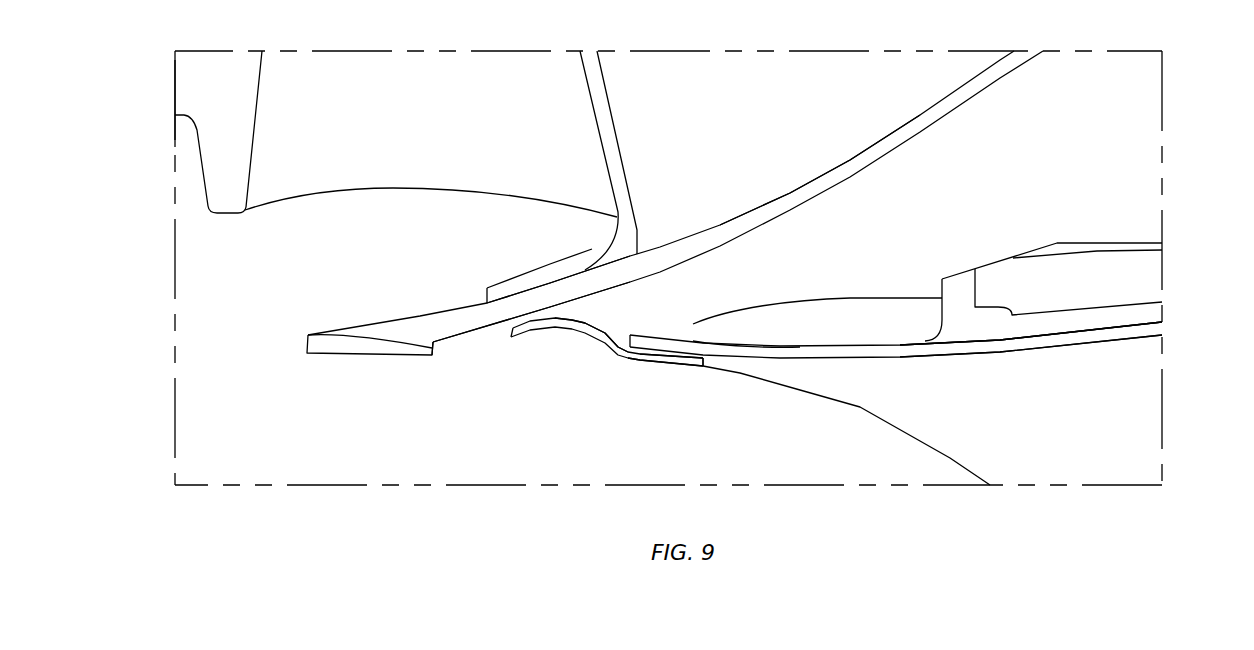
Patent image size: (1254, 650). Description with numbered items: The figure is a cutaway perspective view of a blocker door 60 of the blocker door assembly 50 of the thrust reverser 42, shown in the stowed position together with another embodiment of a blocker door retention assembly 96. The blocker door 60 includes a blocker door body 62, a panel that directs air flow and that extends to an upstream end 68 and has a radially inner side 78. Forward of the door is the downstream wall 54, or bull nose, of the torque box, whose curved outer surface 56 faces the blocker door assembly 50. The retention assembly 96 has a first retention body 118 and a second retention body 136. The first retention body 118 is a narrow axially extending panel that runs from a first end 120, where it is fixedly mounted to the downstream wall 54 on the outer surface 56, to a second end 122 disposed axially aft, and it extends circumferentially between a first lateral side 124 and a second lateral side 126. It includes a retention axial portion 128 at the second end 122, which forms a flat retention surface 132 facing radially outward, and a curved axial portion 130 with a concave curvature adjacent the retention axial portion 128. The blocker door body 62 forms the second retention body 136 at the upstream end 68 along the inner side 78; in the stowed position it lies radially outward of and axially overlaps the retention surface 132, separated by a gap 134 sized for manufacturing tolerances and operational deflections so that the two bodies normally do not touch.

The thrust reverser 42 is at (1049, 60).
The blocker door assembly 50 is at (906, 170).
The downstream wall 54 is at (1017, 123).
The outer surface 56 is at (903, 411).
The blocker door 60 is at (945, 376).
The blocker door body 62 is at (890, 315).
The upstream end 68 is at (637, 336).
The inner side 78 is at (822, 367).
The blocker door retention assembly 96 is at (678, 284).
The first retention body 118 is at (563, 340).
The first end 120 is at (420, 354).
The second end 122 is at (714, 373).
The first lateral side 124 is at (514, 328).
The second lateral side 126 is at (626, 322).
The retention axial portion 128 is at (663, 376).
The curved axial portion 130 is at (538, 307).
The retention surface 132 is at (668, 332).
The gap 134 is at (632, 360).
The second retention body 136 is at (702, 344).